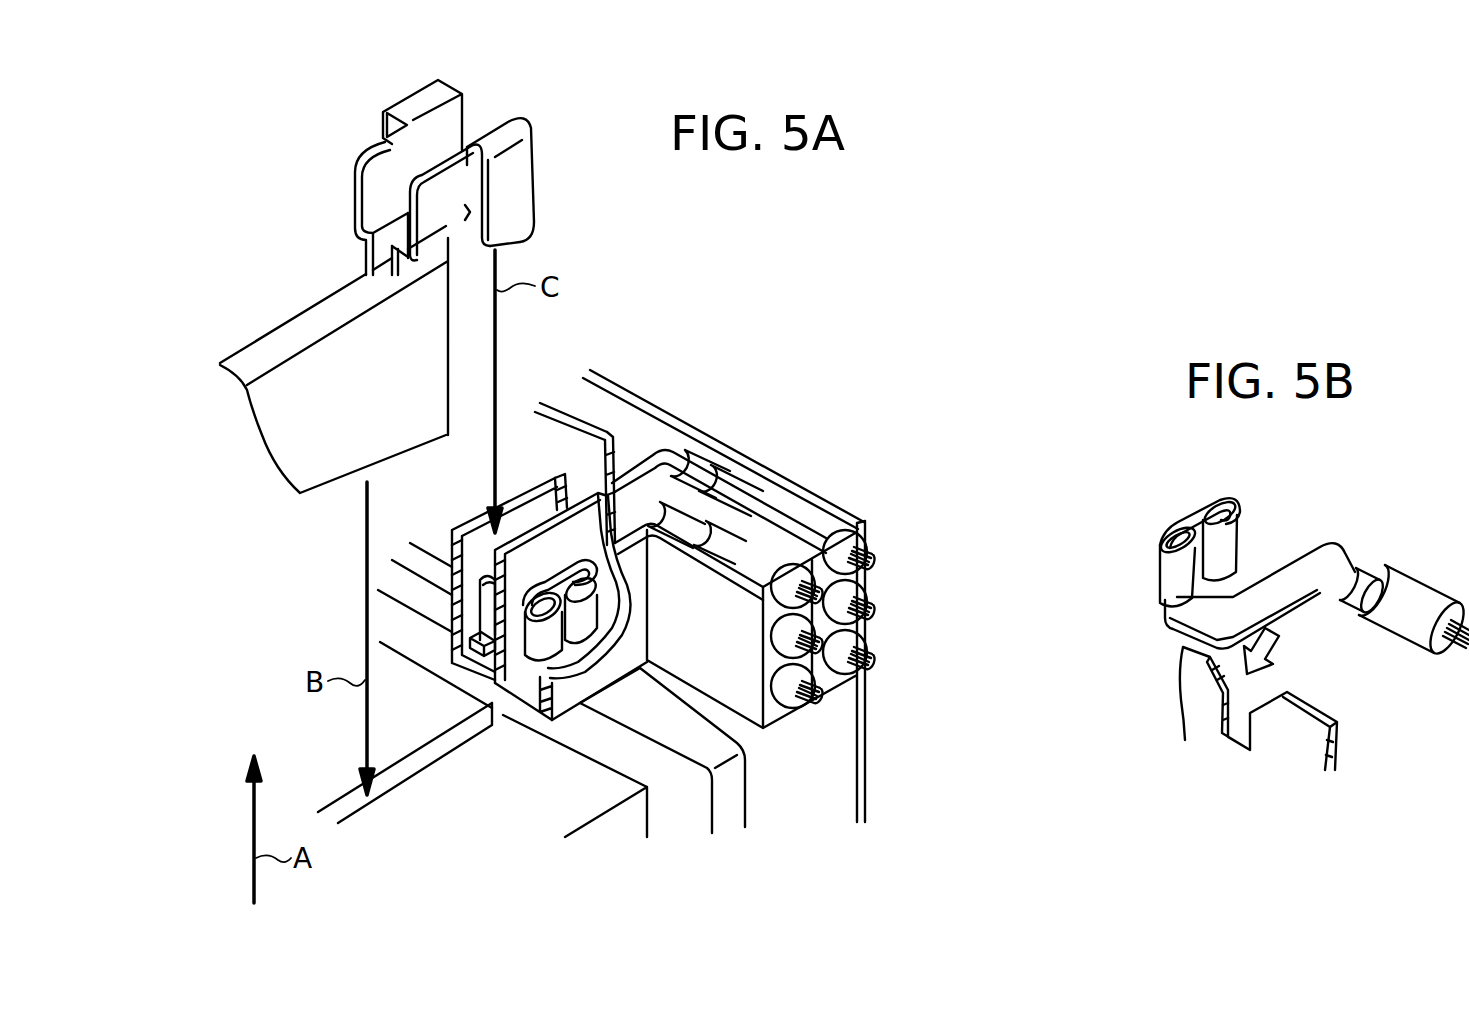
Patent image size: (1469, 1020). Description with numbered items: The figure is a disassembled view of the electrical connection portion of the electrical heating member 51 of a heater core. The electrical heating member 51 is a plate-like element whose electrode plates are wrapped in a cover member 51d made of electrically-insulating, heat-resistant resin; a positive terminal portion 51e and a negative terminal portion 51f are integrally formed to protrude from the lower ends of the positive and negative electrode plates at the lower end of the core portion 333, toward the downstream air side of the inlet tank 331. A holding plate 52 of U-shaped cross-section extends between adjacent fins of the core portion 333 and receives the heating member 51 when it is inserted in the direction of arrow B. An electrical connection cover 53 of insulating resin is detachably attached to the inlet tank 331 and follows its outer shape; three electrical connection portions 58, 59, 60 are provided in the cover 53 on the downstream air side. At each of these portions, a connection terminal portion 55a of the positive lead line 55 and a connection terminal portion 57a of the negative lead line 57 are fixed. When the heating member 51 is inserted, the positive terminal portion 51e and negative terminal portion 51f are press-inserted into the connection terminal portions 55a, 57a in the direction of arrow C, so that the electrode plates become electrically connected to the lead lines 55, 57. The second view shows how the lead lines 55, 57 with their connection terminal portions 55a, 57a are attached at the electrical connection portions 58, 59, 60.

In FIG. 5A, the electrical heating member 51 is at (330, 289).
In FIG. 5A, the cover member 51d is at (315, 395).
In FIG. 5A, the positive terminal portion 51e is at (512, 197).
In FIG. 5A, the negative terminal portion 51f is at (438, 130).
In FIG. 5A, the holding plate 52 is at (397, 775).
In FIG. 5A, the electrical connection cover 53 is at (874, 793).
In FIG. 5A, the positive lead line 55 is at (797, 563).
In FIG. 5B, the positive lead line 55 is at (1317, 597).
In FIG. 5A, the connection terminal portion 55a is at (537, 640).
In FIG. 5B, the connection terminal portion 55a is at (1175, 533).
In FIG. 5A, the negative lead line 57 is at (847, 523).
In FIG. 5B, the negative lead line 57 is at (1417, 597).
In FIG. 5A, the connection terminal portion 57a is at (462, 613).
In FIG. 5B, the connection terminal portion 57a is at (1172, 582).
In FIG. 5A, the electrical connection portion 58 is at (699, 460).
In FIG. 5B, the electrical connection portion 58 is at (1315, 708).
In FIG. 5A, the electrical connection portion 59 is at (699, 460).
In FIG. 5B, the electrical connection portion 59 is at (1315, 708).
In FIG. 5A, the electrical connection portion 60 is at (590, 459).
In FIG. 5B, the electrical connection portion 60 is at (1348, 739).
In FIG. 5A, the inlet tank 331 is at (800, 787).
In FIG. 5A, the core portion 333 is at (483, 792).